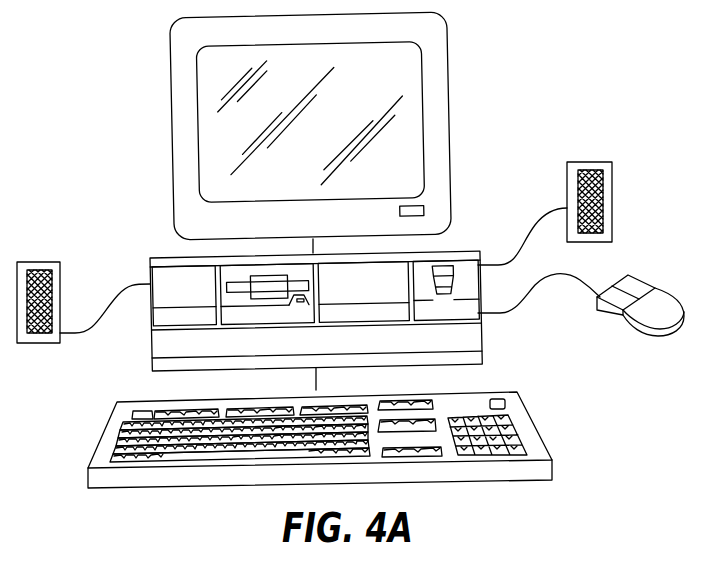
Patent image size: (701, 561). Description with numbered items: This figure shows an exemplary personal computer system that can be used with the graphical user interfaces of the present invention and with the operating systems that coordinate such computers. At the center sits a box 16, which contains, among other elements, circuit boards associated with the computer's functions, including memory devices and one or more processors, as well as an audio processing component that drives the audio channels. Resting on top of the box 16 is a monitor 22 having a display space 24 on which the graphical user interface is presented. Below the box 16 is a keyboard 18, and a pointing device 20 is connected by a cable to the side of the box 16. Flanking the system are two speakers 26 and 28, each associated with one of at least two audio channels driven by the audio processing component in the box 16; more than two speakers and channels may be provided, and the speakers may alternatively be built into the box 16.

The box 16 is at (478, 344).
The keyboard 18 is at (535, 422).
The pointing device 20 is at (625, 323).
The monitor 22 is at (342, 132).
The display space 24 is at (403, 63).
The speaker 26 is at (40, 262).
The speaker 28 is at (593, 162).